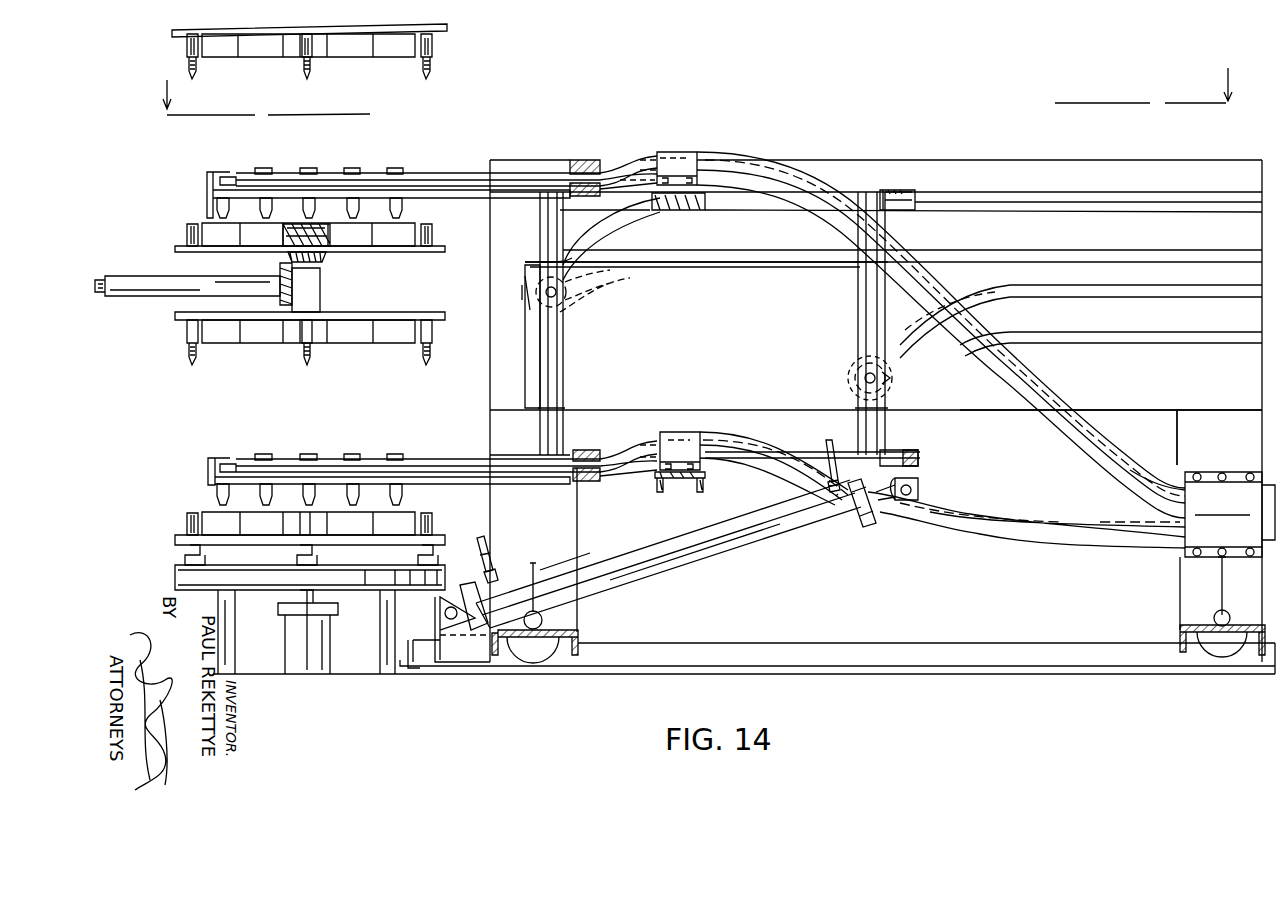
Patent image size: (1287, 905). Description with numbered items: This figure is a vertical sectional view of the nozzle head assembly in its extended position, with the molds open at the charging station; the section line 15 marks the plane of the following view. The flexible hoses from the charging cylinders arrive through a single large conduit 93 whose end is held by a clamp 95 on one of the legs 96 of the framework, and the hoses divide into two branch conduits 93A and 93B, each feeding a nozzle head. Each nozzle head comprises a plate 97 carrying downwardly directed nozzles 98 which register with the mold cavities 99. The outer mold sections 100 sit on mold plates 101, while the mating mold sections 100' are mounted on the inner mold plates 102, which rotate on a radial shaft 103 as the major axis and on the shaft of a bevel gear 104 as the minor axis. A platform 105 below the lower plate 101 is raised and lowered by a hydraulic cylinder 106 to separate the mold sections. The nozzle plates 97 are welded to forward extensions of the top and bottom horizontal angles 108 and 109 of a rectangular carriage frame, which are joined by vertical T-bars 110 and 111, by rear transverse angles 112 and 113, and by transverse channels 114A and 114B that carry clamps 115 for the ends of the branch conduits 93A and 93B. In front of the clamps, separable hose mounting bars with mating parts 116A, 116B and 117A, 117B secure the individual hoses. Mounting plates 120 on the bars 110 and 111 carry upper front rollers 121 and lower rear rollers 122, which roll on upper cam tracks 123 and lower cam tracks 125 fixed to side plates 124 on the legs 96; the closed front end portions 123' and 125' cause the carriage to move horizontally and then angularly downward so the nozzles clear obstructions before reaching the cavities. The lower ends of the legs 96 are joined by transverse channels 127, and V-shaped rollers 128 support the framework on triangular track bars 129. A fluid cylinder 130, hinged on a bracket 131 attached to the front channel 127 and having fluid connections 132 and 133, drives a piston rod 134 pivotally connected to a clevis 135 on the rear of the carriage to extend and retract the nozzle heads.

The section line 15 is at (695, 95).
The conduit 93 is at (1170, 483).
The branch conduit 93A is at (998, 364).
The branch conduit 93B is at (956, 528).
The clamp 95 is at (1234, 470).
The leg 96 is at (563, 542).
The nozzle plate 97 is at (210, 188).
The nozzle 98 is at (263, 170).
The mold cavity 99 is at (328, 244).
The mold section 100 is at (303, 299).
The mold section 100' is at (295, 296).
The mold plate 101 is at (176, 36).
The mold plate 102 is at (178, 247).
The radial shaft 103 is at (128, 290).
The bevel gear 104 is at (280, 262).
The platform 105 is at (190, 578).
The hydraulic cylinder 106 is at (300, 660).
The top horizontal angle 108 is at (595, 208).
The bottom horizontal angle 109 is at (803, 449).
The vertical angle or T-bar 110 is at (558, 362).
The vertical angle or T-bar 111 is at (866, 302).
The transverse angle 112 is at (914, 192).
The transverse angle 113 is at (917, 457).
The transverse channel 114A is at (666, 210).
The transverse channel 114B is at (675, 490).
The clamp 115 is at (690, 153).
The upper hose mounting bar part 116A is at (576, 160).
The lower hose mounting bar part 116B is at (590, 198).
The upper hose mounting bar part 117A is at (598, 434).
The lower hose mounting bar part 117B is at (583, 477).
The mounting plate 120 is at (526, 358).
The upper front roller 121 is at (578, 285).
The lower rear roller 122 is at (888, 385).
The upper cam track 123 is at (692, 277).
The closed front end portion 123' is at (595, 302).
The side plate 124 is at (1088, 404).
The lower cam track 125 is at (1136, 335).
The closed front end portion 125' is at (838, 378).
The transverse channel 127 is at (580, 632).
The V-shaped roller 128 is at (538, 650).
The triangular track bar 129 is at (760, 652).
The fluid cylinder 130 is at (698, 564).
The bracket 131 is at (440, 614).
The fluid connection 132 is at (490, 556).
The fluid connection 133 is at (834, 468).
The piston rod 134 is at (862, 527).
The clevis 135 is at (920, 472).